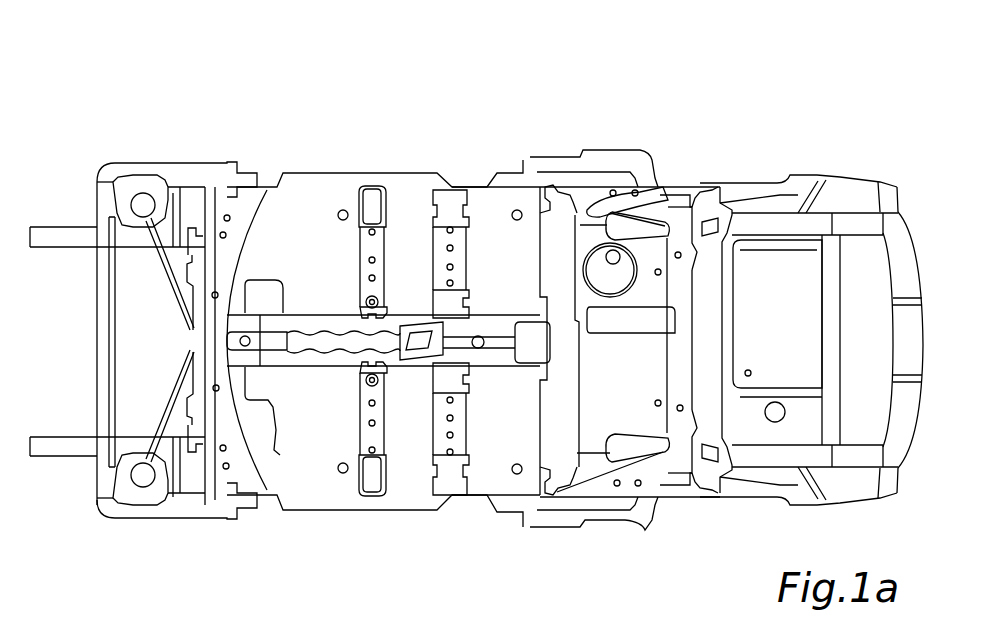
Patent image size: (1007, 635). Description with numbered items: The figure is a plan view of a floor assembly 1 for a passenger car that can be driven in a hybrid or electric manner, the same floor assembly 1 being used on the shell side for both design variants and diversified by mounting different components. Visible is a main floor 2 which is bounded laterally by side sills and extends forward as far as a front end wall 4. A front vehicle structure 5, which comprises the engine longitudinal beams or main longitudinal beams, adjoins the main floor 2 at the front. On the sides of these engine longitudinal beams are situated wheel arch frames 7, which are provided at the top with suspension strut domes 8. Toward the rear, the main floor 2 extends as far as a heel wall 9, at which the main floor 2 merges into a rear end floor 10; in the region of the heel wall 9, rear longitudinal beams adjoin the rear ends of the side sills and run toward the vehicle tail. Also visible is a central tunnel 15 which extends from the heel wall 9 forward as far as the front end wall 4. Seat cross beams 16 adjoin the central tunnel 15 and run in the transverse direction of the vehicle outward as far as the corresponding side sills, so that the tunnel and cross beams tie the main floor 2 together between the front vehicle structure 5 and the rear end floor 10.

The floor assembly 1 is at (757, 95).
The main floor 2 is at (347, 120).
The front end wall 4 is at (192, 343).
The front vehicle structure 5 is at (166, 135).
The wheel arch frame 7 is at (172, 520).
The suspension strut dome 8 is at (138, 503).
The heel wall 9 is at (563, 238).
The rear end floor 10 is at (660, 140).
The central tunnel 15 is at (290, 322).
The seat cross beam 16 is at (376, 245).